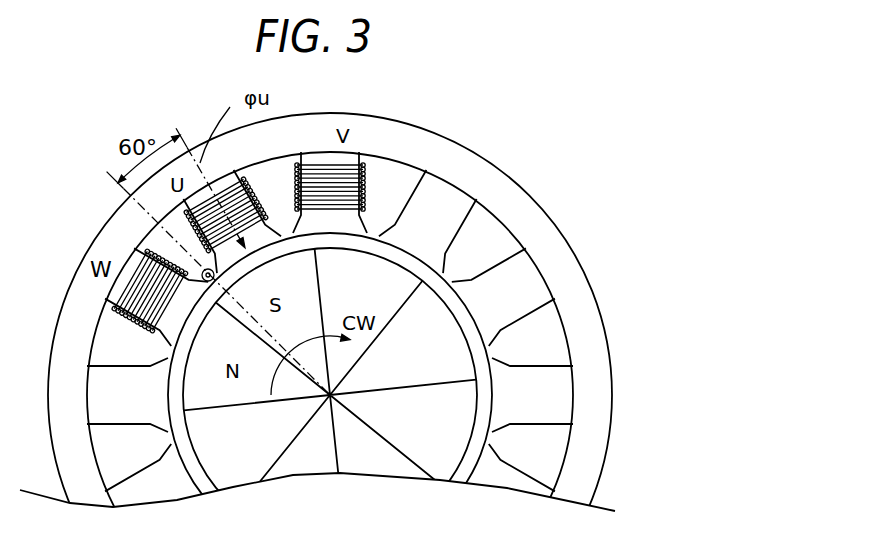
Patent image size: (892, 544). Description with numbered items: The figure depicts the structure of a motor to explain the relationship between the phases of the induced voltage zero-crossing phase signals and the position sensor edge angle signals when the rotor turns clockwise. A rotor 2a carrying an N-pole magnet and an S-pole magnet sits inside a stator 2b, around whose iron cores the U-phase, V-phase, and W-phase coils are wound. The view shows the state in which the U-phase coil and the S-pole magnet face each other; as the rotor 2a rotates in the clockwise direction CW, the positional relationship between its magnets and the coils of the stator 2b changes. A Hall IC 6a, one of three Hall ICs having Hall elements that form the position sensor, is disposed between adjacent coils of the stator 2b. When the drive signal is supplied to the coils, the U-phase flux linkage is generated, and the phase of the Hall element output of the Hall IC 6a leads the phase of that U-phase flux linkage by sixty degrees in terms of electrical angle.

The rotor 2a is at (455, 315).
The stator 2b is at (477, 152).
The Hall IC 6a is at (202, 272).